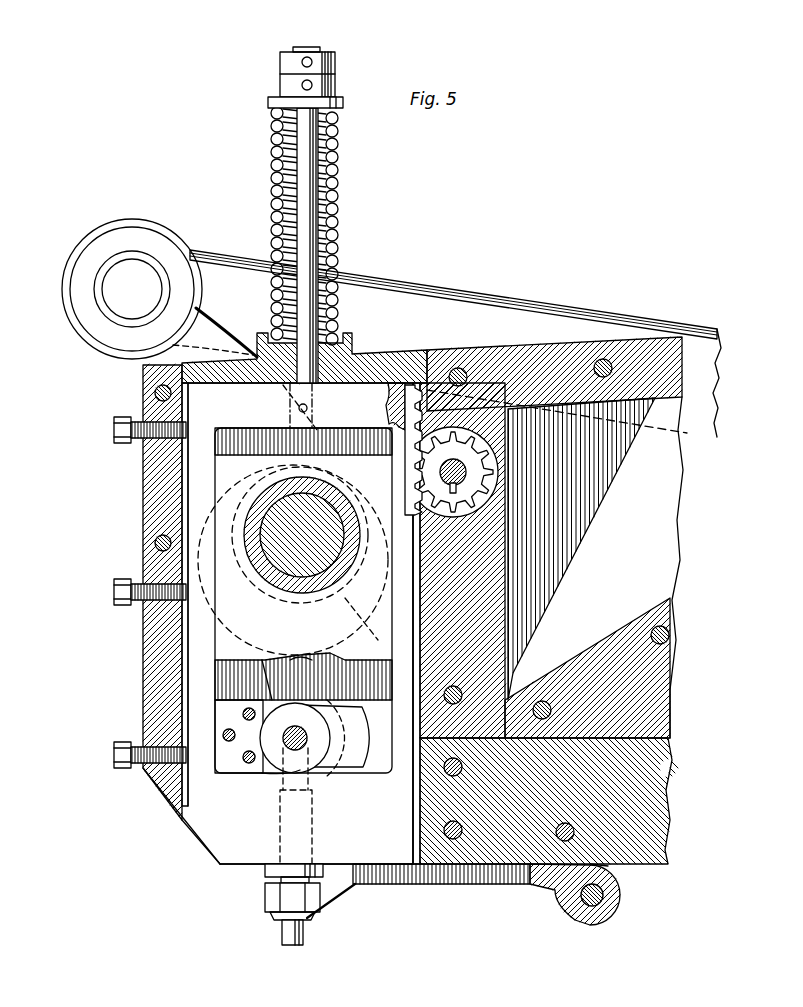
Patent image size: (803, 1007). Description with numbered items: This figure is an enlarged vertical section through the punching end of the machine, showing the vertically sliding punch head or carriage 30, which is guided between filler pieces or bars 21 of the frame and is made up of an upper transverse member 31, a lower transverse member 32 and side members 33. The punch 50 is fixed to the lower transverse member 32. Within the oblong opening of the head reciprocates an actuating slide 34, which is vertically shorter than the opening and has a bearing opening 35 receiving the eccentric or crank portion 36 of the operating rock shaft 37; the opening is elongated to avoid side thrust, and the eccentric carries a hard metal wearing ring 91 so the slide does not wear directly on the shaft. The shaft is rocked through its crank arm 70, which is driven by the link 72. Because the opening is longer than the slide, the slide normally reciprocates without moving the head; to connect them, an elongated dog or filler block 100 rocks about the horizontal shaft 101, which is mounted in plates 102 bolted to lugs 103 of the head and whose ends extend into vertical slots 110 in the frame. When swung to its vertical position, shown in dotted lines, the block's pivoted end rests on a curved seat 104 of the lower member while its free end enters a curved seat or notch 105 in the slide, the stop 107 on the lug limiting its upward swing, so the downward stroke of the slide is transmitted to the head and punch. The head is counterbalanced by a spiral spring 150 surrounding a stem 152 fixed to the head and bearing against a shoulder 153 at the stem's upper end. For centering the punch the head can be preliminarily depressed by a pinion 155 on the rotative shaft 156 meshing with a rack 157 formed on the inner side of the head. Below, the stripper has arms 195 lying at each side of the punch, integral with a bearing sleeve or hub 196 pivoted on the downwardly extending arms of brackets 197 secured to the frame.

The filler pieces or bars 21 is at (143, 542).
The punch head or carriage 30 is at (196, 783).
The upper transverse member 31 is at (301, 623).
The lower transverse member 32 is at (316, 836).
The side members 33 is at (301, 623).
The actuating slide 34 is at (293, 560).
The bearing opening 35 is at (350, 548).
The eccentric or crank portion 36 is at (283, 510).
The operating rock shaft 37 is at (365, 620).
The punch 50 is at (283, 926).
The crank arm 70 is at (228, 336).
The link 72 is at (451, 343).
The hard metal wearing ring 91 is at (302, 557).
The dog or filler block 100 is at (318, 715).
The horizontal shaft 101 is at (295, 724).
The plates 102 is at (268, 690).
The lug 103 is at (220, 718).
The curved seat 104 is at (282, 778).
The curved seat or notch 105 is at (300, 664).
The stop 107 is at (303, 676).
The vertical slots 110 is at (268, 773).
The spring 150 is at (272, 164).
The stem 152 is at (305, 50).
The shoulder 153 is at (280, 86).
The pinion 155 is at (480, 474).
The pinion shaft 156 is at (465, 465).
The rack 157 is at (418, 437).
The stripper arms 195 is at (348, 887).
The bearing sleeve or hub 196 is at (566, 893).
The bracket 197 is at (606, 870).